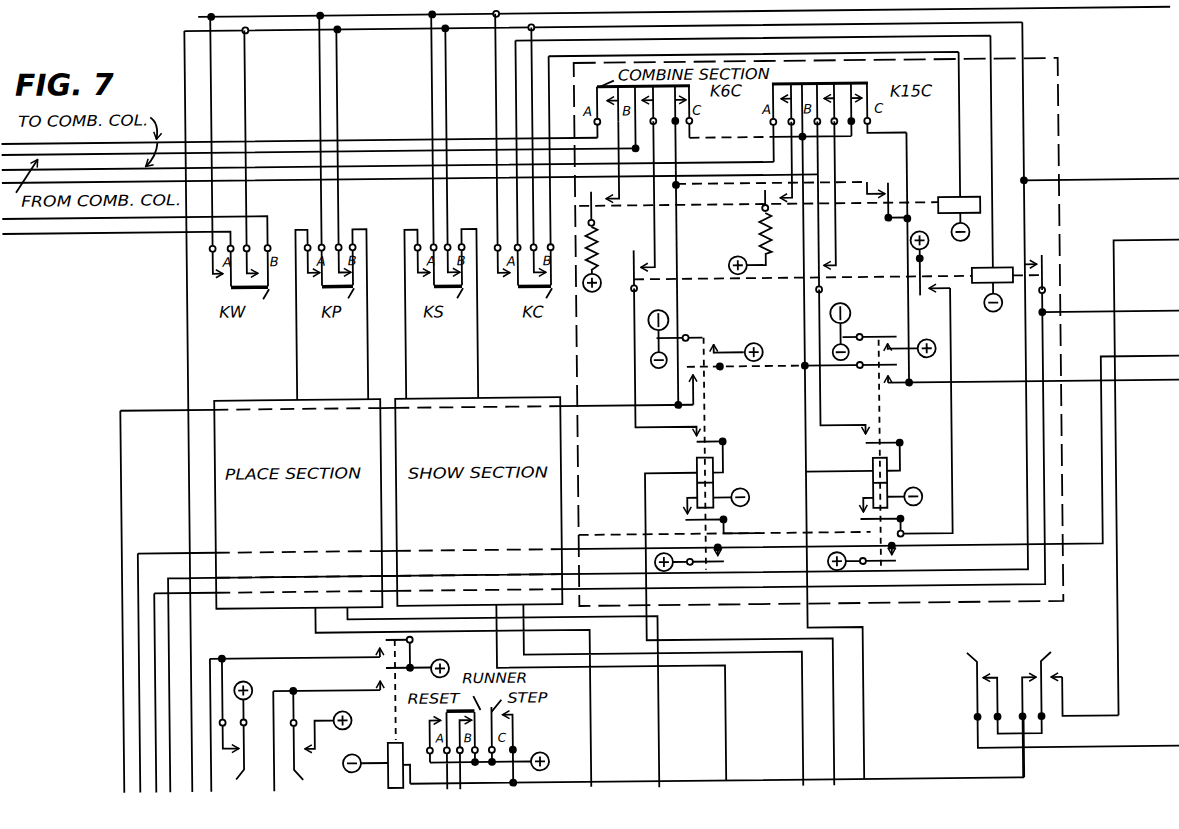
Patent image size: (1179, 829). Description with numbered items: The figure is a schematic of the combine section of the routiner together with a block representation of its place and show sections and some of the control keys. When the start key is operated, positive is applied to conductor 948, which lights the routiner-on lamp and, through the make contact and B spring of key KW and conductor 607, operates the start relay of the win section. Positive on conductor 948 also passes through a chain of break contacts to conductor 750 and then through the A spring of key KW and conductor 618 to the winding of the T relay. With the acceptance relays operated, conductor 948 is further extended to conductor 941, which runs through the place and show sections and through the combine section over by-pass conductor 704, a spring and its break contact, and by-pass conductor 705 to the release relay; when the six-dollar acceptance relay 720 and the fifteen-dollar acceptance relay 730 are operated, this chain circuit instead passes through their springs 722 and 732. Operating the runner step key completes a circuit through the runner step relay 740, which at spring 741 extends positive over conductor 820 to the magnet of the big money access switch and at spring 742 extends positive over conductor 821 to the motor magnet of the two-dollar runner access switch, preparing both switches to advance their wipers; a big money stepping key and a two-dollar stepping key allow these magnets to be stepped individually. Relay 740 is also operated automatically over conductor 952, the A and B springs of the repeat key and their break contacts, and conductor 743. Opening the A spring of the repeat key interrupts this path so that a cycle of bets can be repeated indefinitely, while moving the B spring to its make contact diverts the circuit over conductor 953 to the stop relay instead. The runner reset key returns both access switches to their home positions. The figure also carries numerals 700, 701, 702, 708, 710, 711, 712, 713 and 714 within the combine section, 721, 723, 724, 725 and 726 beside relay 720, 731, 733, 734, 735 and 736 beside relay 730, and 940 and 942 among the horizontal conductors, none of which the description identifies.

The conductor 750 is at (1100, 19).
The conductor 948 is at (1115, 180).
The conductor 607 is at (22, 235).
The conductor 618 is at (78, 235).
The relay 700 is at (956, 207).
The resistor 701 is at (592, 229).
The resistor 702 is at (763, 203).
The by-pass conductor 704 is at (675, 241).
The by-pass conductor 705 is at (906, 160).
The relay contact 708 is at (889, 179).
The relay 710 is at (984, 278).
The relay contact 711 is at (627, 206).
The relay contact 712 is at (818, 262).
The relay contact 713 is at (915, 286).
The relay contact 714 is at (1040, 277).
The $6.00 acceptance relay 720 is at (692, 472).
The relay contact 721 is at (703, 338).
The spring 722 is at (714, 376).
The relay contact 723 is at (705, 448).
The relay contact 724 is at (696, 531).
The relay contact 725 is at (738, 565).
The indicator lamp 726 is at (645, 328).
The $15.00 acceptance relay 730 is at (868, 472).
The relay contact 731 is at (896, 338).
The spring 732 is at (870, 374).
The relay contact 733 is at (882, 450).
The relay contact 734 is at (863, 528).
The relay contact 735 is at (905, 565).
The indicator lamp 736 is at (827, 322).
The runner step relay 740 is at (380, 757).
The spring 741 is at (382, 644).
The spring 742 is at (382, 671).
The conductor 743 is at (932, 787).
The conductor 820 is at (259, 656).
The conductor 821 is at (304, 688).
The line 940 is at (174, 556).
The conductor 941 is at (169, 411).
The line 942 is at (149, 623).
The conductor 952 is at (1092, 758).
The conductor 953 is at (1153, 245).